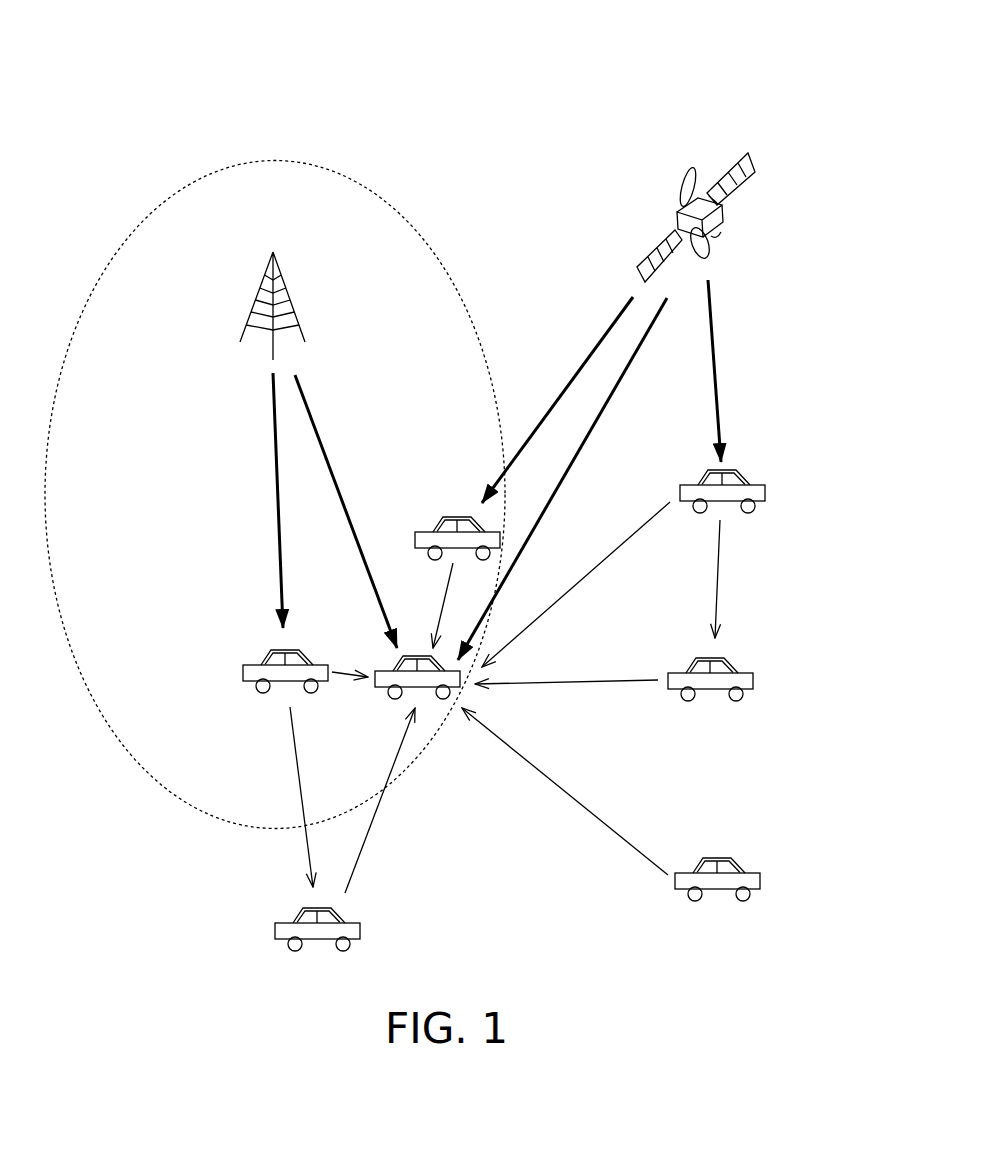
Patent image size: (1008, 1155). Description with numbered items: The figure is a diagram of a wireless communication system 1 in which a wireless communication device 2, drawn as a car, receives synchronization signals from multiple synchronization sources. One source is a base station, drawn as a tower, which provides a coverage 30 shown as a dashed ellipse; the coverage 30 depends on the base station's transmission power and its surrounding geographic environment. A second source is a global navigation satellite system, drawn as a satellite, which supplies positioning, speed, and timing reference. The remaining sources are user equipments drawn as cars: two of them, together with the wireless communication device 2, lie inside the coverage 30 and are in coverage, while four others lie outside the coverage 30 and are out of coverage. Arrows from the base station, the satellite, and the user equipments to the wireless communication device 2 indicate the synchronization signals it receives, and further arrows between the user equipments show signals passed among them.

The wireless communication system 1 is at (797, 39).
The coverage 30 is at (422, 233).
The wireless communication device 2 is at (413, 668).